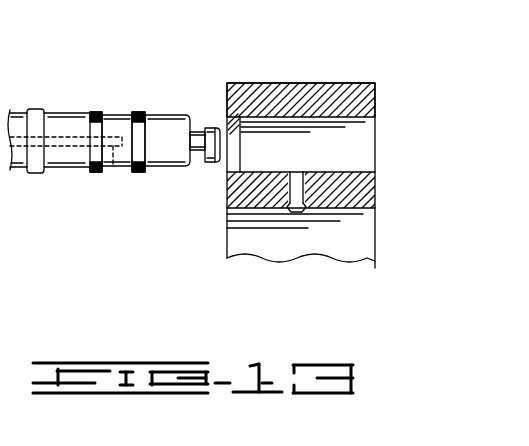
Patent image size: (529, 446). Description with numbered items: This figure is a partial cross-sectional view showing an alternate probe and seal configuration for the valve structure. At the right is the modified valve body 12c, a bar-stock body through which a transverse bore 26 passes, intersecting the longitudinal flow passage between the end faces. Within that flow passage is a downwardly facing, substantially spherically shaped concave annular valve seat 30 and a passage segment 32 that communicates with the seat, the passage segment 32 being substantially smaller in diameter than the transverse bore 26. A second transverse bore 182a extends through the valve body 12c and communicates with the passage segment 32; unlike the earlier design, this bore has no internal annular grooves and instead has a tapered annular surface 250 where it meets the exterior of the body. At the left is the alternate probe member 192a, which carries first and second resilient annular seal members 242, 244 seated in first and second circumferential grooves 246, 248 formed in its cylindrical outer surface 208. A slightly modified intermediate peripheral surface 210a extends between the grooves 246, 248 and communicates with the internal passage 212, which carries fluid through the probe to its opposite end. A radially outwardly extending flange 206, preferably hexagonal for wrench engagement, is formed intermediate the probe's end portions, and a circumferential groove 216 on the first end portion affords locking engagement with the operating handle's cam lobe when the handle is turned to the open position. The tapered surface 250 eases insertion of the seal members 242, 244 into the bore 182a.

The modified valve body 12c is at (376, 92).
The transverse bore 26 is at (247, 215).
The annular valve seat 30 is at (290, 214).
The passage segment 32 is at (292, 193).
The second transverse bore 182a is at (306, 122).
The probe member 192a is at (72, 112).
The flange 206 is at (33, 120).
The cylindrical outer surface 208 is at (152, 116).
The intermediate peripheral surface 210a is at (107, 172).
The internal passage 212 is at (48, 176).
The circumferential groove 216 is at (199, 152).
The first resilient annular seal member 242 is at (138, 150).
The second resilient annular seal member 244 is at (96, 114).
The first circumferential groove 246 is at (167, 116).
The second circumferential groove 248 is at (96, 130).
The tapered annular surface 250 is at (231, 110).